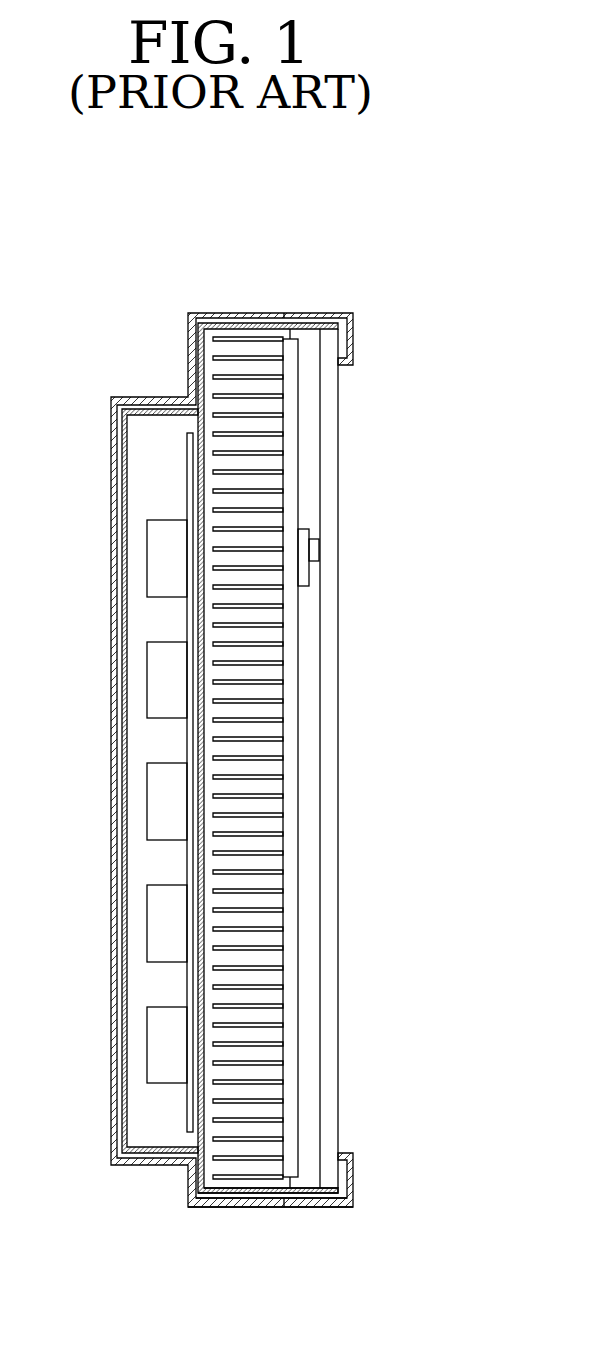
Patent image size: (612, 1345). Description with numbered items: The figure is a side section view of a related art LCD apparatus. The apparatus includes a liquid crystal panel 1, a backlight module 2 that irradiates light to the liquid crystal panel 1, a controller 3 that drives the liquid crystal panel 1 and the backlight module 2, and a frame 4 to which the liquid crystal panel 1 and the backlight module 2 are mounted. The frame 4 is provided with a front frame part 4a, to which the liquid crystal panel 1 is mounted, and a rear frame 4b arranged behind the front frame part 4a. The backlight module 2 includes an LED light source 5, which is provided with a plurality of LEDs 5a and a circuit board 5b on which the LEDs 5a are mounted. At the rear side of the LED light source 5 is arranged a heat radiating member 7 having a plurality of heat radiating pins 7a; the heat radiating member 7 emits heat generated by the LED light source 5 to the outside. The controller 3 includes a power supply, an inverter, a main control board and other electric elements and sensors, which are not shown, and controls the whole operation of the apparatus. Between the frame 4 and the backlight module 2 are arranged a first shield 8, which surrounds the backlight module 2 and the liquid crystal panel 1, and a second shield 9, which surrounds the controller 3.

The liquid crystal panel 1 is at (332, 928).
The backlight module 2 is at (308, 338).
The controller 3 is at (150, 472).
The frame 4 is at (232, 812).
The front frame part 4a is at (318, 1227).
The rear frame 4b is at (253, 1200).
The LED light source 5 is at (371, 562).
The LEDs 5a is at (355, 536).
The circuit board 5b is at (305, 572).
The heat radiating member 7 is at (293, 397).
The heat radiating pins 7a is at (223, 358).
The first shield 8 is at (218, 1193).
The second shield 9 is at (155, 1150).